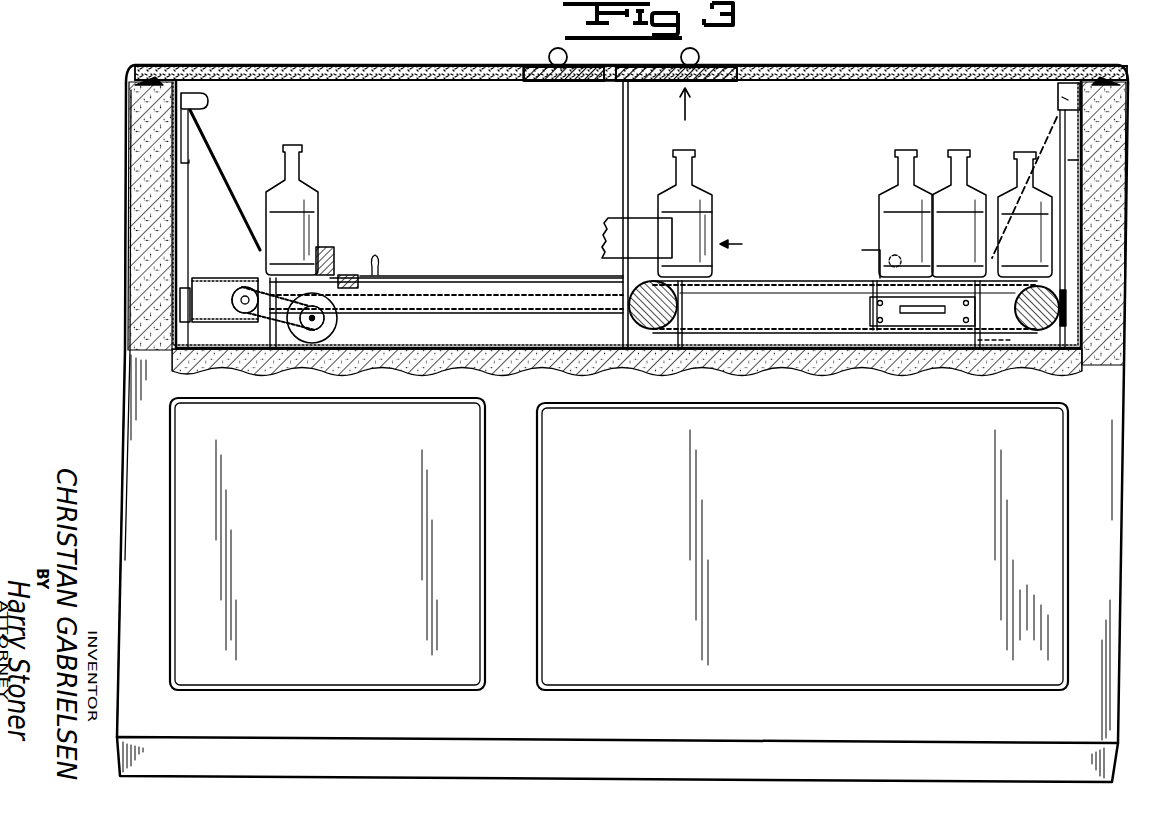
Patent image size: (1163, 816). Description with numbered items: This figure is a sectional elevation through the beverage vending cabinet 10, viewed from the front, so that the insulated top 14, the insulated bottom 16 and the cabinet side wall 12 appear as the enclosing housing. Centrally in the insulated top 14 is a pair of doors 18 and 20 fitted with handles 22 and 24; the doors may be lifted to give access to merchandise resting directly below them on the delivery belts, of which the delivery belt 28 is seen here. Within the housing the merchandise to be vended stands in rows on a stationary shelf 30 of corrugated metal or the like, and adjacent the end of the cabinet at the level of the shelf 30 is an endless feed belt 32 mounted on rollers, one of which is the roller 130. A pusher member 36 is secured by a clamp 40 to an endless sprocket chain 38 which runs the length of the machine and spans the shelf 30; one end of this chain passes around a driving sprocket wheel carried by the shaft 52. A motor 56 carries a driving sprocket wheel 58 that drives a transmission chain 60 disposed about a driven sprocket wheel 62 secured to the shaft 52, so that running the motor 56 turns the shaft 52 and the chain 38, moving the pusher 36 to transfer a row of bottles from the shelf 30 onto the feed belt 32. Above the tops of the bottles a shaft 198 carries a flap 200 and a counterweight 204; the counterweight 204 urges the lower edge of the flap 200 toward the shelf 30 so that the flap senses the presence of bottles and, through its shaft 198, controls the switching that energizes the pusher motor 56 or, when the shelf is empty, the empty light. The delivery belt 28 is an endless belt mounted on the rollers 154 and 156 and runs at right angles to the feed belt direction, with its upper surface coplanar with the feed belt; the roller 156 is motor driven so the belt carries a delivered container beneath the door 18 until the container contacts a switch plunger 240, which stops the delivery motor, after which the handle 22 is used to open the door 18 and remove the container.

The cabinet 10 is at (1080, 588).
The front wall 12 is at (126, 388).
The insulated top 14 is at (858, 74).
The insulated bottom 16 is at (1080, 766).
The door 18 is at (735, 68).
The door 20 is at (594, 82).
The handle 22 is at (703, 82).
The handle 24 is at (562, 83).
The delivery belt 28 is at (808, 330).
The stationary shelf 30 is at (528, 280).
The feed belt 32 is at (208, 284).
The pusher member 36 is at (330, 250).
The endless sprocket chain 38 is at (470, 288).
The clamp 40 is at (350, 272).
The shaft 52 is at (248, 324).
The motor 56 is at (333, 332).
The driving sprocket wheel 58 is at (332, 318).
The transmission chain 60 is at (264, 324).
The driven sprocket wheel 62 is at (232, 300).
The roller 130 is at (191, 287).
The roller 154 is at (1050, 331).
The roller 156 is at (654, 330).
The shaft 198 is at (1060, 95).
The flap 200 is at (184, 183).
The counterweight 204 is at (183, 92).
The switch plunger 240 is at (714, 222).